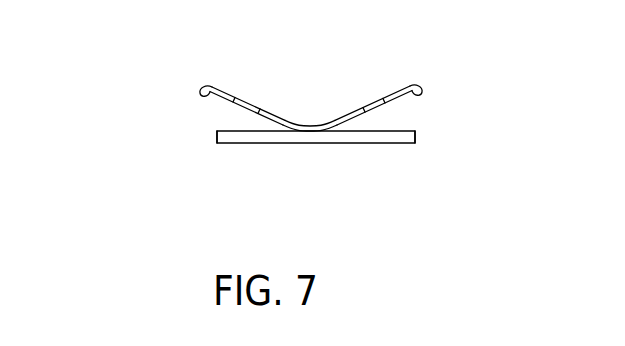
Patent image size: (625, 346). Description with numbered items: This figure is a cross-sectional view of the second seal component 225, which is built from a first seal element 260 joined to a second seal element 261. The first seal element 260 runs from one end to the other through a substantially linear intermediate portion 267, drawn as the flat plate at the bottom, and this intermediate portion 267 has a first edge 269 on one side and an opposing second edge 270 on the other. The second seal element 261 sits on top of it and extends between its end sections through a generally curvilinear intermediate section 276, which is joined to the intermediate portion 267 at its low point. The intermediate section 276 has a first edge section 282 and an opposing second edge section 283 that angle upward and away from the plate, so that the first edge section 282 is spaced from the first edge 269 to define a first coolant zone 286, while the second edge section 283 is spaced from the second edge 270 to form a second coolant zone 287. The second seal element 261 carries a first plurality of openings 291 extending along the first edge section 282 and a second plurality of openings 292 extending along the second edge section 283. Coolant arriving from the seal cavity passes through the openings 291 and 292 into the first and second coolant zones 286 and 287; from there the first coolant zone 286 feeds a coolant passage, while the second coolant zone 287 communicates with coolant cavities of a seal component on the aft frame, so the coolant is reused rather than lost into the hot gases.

The second seal component 225 is at (156, 102).
The first seal element 260 is at (260, 148).
The second seal element 261 is at (286, 110).
The intermediate portion 267 is at (360, 135).
The first edge 269 is at (217, 137).
The second edge 270 is at (415, 138).
The intermediate section 276 is at (324, 122).
The first edge section 282 is at (203, 94).
The second edge section 283 is at (426, 89).
The first coolant zone 286 is at (238, 123).
The second coolant zone 287 is at (402, 110).
The first plurality of openings 291 is at (247, 97).
The second plurality of openings 292 is at (385, 124).